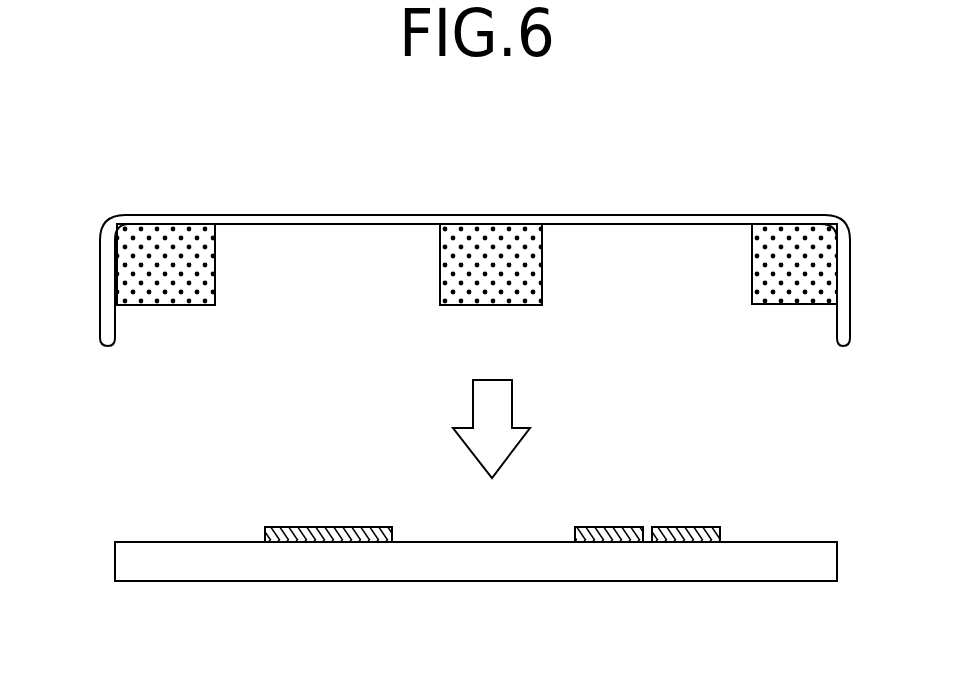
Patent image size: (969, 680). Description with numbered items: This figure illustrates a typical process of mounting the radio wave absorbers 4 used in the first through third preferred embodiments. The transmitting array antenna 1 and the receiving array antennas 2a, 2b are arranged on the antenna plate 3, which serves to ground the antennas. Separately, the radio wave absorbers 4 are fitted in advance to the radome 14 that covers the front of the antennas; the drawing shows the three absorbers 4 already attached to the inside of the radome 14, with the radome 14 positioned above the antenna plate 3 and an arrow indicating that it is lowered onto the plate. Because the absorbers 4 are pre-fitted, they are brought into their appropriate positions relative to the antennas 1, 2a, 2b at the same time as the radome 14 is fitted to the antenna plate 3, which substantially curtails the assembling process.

The radome 14 is at (101, 246).
The radio wave absorbers 4 is at (173, 234).
The antenna plate 3 is at (787, 578).
The transmitting array antenna 1 is at (325, 536).
The receiving array antenna 2a is at (609, 538).
The receiving array antenna 2b is at (687, 538).